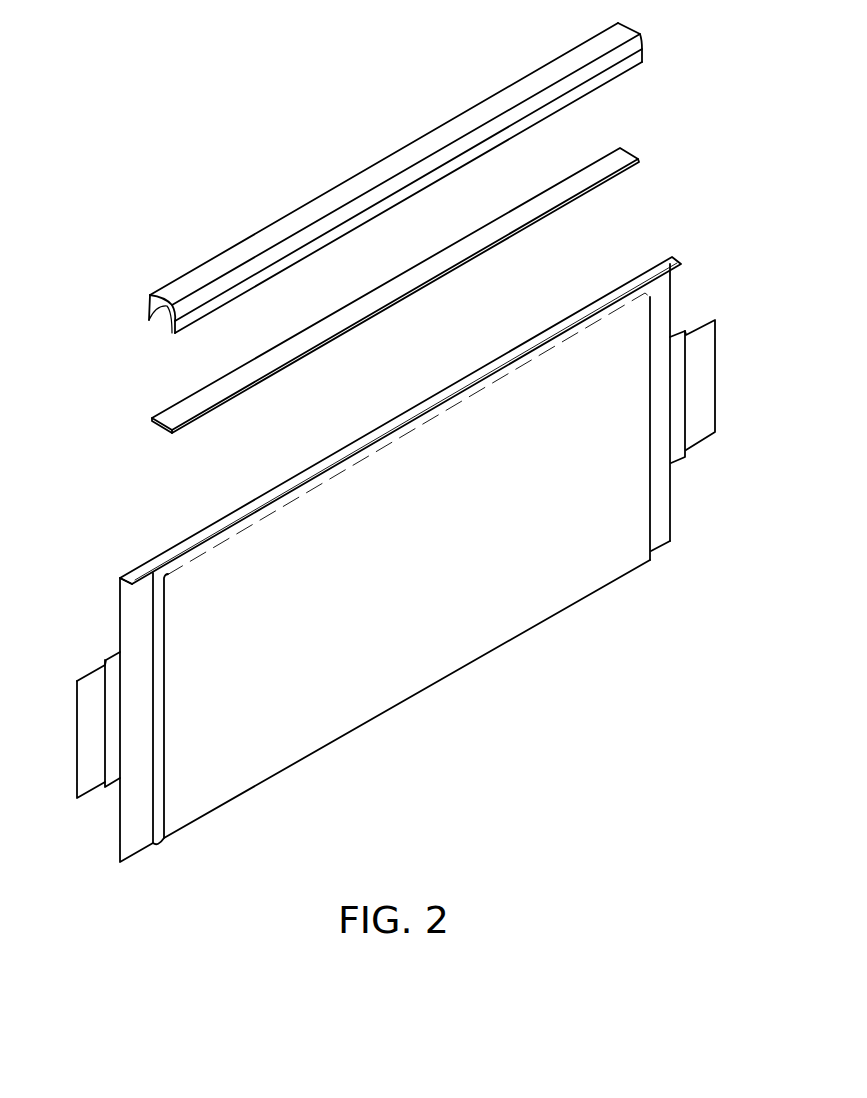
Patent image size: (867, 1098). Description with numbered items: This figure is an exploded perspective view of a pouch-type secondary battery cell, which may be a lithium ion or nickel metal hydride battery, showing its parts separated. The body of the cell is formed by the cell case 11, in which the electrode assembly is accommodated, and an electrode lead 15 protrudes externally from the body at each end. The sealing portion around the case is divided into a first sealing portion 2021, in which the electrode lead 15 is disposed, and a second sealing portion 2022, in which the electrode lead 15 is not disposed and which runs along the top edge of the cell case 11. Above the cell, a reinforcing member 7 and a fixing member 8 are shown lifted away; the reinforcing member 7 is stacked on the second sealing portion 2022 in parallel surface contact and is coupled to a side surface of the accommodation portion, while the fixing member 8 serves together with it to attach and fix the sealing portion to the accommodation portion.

The fixing member 8 is at (170, 292).
The reinforcing member 7 is at (169, 414).
The cell case 11 is at (432, 663).
The electrode lead 15 is at (92, 789).
The first sealing portion 2021 is at (128, 627).
The second sealing portion 2022 is at (138, 570).